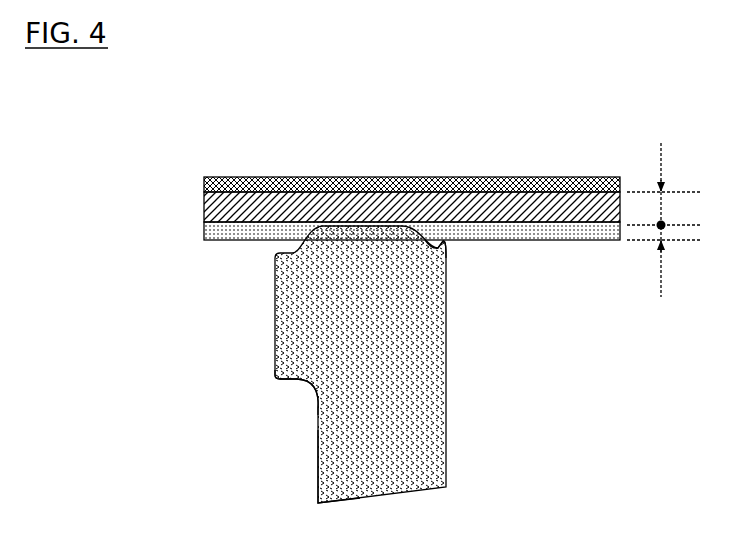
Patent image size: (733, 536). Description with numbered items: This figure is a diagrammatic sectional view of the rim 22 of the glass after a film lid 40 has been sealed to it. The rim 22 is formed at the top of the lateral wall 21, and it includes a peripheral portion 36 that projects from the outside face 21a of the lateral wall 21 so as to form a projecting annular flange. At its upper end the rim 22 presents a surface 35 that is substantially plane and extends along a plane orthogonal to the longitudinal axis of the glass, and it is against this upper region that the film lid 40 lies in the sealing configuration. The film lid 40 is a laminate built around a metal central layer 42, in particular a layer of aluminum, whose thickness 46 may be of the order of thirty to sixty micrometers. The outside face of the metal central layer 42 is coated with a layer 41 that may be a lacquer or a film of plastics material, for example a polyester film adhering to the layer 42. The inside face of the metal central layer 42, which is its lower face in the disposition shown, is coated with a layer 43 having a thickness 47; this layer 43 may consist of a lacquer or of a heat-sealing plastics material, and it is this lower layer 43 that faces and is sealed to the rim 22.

The lateral wall 21 is at (447, 417).
The outside face 21a is at (318, 452).
The rim 22 is at (226, 288).
The surface 35 is at (440, 247).
The peripheral portion 36 is at (275, 350).
The film lid 40 is at (440, 177).
The layer 41 is at (202, 187).
The metal central layer 42 is at (202, 210).
The layer 43 is at (202, 236).
The thickness 46 is at (663, 191).
The thickness 47 is at (663, 268).